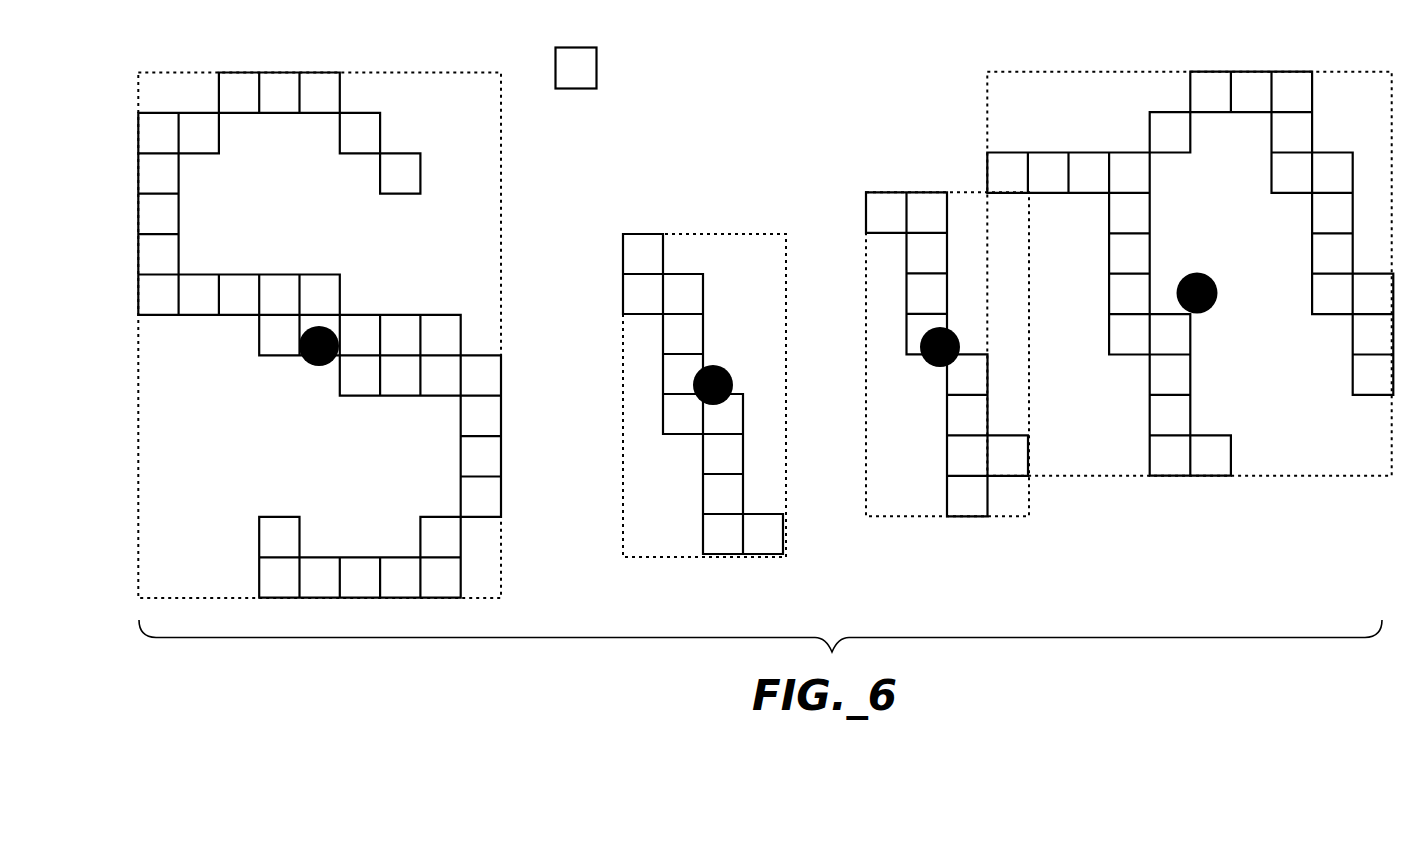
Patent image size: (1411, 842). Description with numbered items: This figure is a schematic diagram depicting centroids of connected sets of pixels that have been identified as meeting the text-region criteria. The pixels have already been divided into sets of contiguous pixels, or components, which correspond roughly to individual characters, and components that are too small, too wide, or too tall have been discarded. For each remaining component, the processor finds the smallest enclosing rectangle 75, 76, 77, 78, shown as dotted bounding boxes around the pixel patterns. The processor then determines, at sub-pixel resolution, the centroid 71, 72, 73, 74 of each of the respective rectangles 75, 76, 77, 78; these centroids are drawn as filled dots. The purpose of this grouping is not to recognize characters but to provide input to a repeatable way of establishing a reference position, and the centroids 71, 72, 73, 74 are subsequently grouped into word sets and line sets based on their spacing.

The centroid 71 is at (322, 328).
The centroid 72 is at (695, 382).
The centroid 73 is at (922, 342).
The centroid 74 is at (1210, 312).
The smallest enclosing rectangle 75 is at (393, 72).
The smallest enclosing rectangle 76 is at (710, 234).
The smallest enclosing rectangle 77 is at (967, 192).
The smallest enclosing rectangle 78 is at (1057, 72).